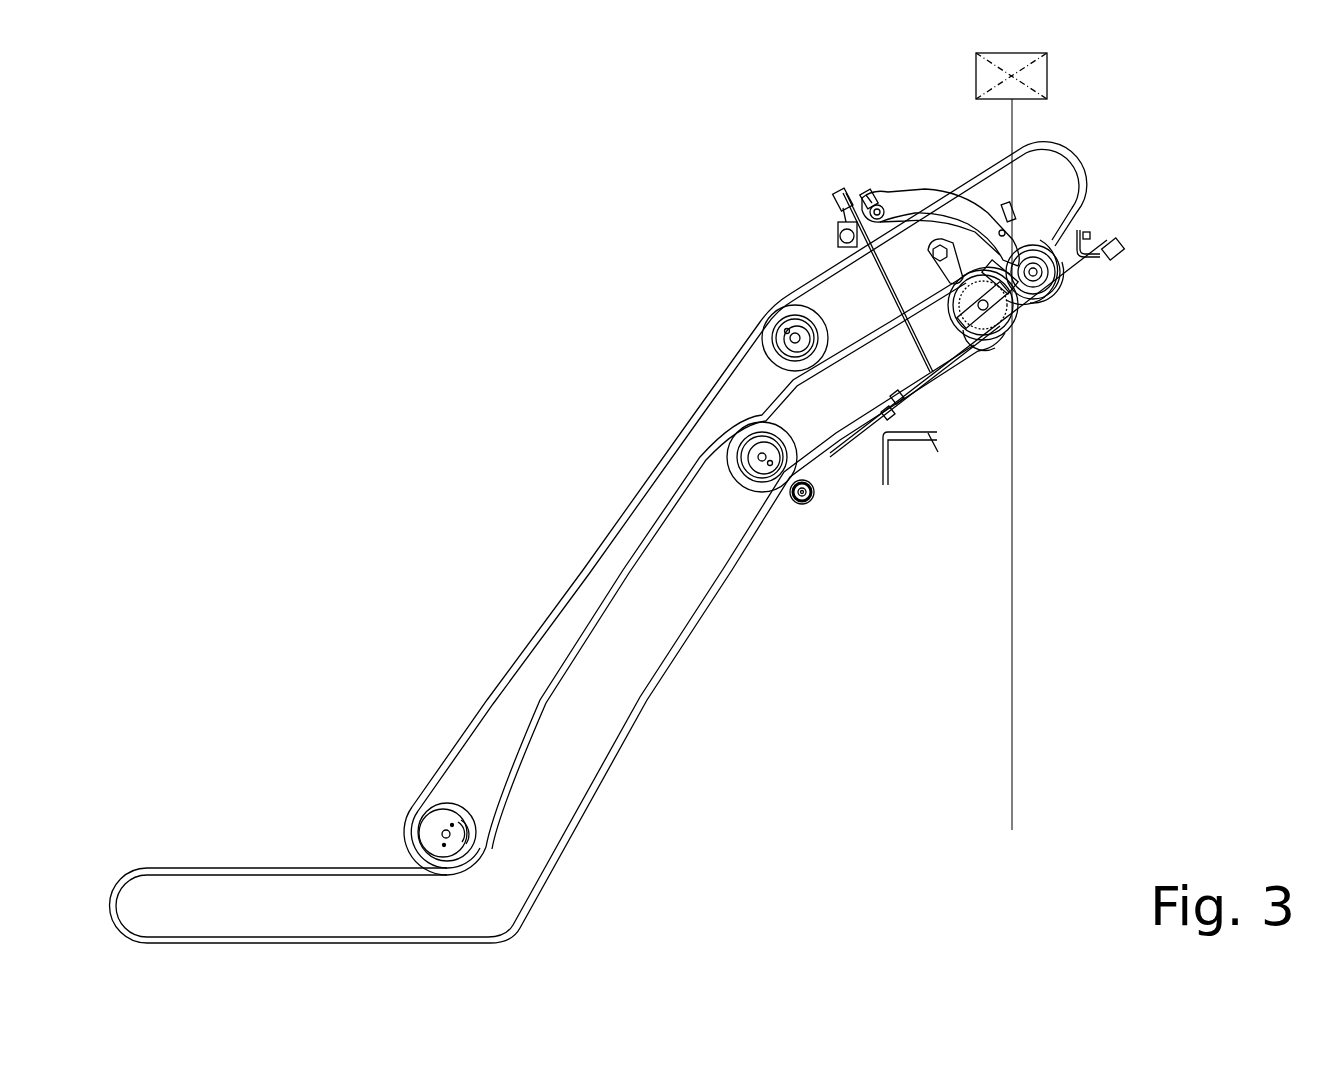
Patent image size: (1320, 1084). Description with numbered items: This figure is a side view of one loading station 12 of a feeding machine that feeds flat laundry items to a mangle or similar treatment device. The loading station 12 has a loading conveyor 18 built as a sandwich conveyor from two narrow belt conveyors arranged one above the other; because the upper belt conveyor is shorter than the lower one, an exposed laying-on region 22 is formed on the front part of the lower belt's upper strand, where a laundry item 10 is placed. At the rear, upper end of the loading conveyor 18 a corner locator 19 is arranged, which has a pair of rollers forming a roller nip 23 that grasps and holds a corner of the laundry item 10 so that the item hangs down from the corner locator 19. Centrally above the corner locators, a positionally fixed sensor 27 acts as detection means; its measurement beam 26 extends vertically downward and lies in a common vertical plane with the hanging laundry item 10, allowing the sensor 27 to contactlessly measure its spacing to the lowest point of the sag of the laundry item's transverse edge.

The laundry item 10 is at (1012, 722).
The loading station 12 is at (257, 611).
The loading conveyor 18 is at (737, 648).
The corner locator 19 is at (1046, 322).
The laying-on region 22 is at (243, 822).
The roller nip 23 is at (1030, 312).
The measurement beam 26 is at (1012, 125).
The sensor 27 is at (1037, 78).